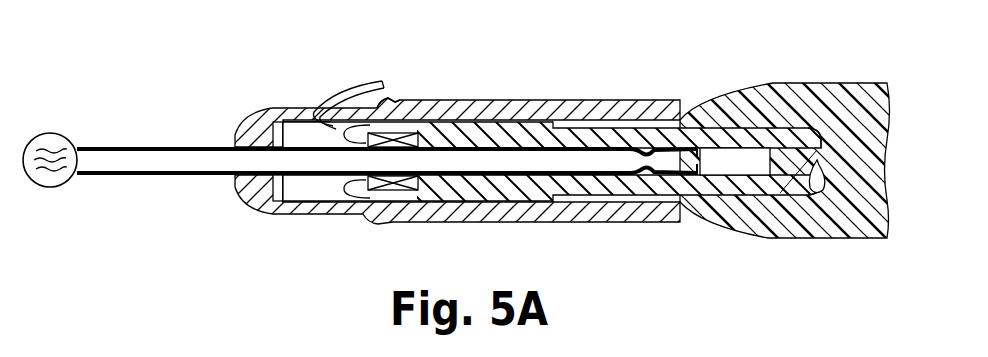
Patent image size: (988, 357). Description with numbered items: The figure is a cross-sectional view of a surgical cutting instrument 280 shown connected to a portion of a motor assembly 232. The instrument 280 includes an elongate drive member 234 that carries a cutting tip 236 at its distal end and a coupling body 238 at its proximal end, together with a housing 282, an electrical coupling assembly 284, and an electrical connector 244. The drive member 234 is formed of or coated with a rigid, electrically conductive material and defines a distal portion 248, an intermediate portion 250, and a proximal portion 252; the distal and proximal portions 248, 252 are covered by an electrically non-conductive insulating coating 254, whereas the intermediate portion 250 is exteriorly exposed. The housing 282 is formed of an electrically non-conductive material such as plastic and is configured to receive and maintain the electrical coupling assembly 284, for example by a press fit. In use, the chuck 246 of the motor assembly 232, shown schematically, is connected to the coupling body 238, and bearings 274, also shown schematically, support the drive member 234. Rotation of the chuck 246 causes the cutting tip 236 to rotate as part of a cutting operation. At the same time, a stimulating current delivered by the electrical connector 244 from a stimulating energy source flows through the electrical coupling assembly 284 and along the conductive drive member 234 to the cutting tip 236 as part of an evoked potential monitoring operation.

The motor assembly 232 is at (812, 73).
The elongate drive member 234 is at (387, 178).
The cutting tip 236 is at (50, 125).
The coupling body 238 is at (689, 172).
The electrical connector 244 is at (387, 85).
The chuck 246 is at (742, 137).
The distal portion 248 is at (105, 163).
The intermediate portion 250 is at (283, 160).
The proximal portion 252 is at (583, 160).
The insulating coating 254 is at (489, 159).
The bearings 274 is at (417, 110).
The surgical cutting instrument 280 is at (457, 120).
The housing 282 is at (613, 88).
The electrical coupling assembly 284 is at (301, 227).